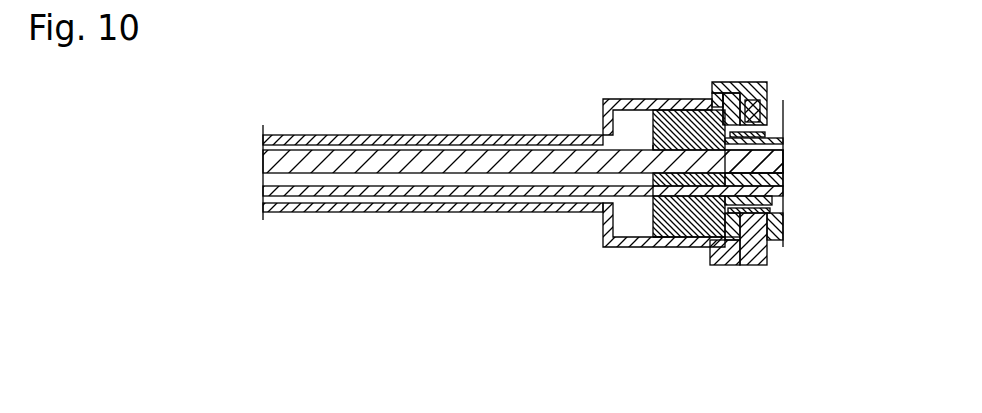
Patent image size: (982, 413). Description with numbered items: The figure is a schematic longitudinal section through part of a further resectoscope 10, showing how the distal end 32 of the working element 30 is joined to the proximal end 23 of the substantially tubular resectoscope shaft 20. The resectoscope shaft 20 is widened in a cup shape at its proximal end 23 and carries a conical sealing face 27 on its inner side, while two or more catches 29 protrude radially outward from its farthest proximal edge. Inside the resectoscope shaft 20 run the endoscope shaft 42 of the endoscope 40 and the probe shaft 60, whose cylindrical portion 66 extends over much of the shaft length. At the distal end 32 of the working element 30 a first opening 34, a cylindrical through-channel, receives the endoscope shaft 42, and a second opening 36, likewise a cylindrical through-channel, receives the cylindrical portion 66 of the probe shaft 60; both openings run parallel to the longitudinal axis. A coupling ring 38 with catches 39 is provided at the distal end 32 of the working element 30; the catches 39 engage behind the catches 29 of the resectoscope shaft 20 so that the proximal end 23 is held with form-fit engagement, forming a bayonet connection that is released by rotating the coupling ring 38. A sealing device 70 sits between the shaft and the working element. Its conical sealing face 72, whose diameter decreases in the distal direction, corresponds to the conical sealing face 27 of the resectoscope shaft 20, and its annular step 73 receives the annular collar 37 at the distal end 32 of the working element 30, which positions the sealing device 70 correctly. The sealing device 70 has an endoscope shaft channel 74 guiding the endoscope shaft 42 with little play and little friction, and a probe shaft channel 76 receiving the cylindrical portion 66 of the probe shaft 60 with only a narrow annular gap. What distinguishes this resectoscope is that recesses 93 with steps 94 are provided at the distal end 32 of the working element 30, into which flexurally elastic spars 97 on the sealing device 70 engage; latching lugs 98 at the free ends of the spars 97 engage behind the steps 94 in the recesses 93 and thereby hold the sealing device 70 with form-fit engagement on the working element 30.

The resectoscope 10 is at (311, 53).
The resectoscope shaft 20 is at (438, 134).
The proximal end 23 is at (654, 105).
The conical sealing face 27 is at (670, 112).
The catches 29 is at (737, 100).
The working element 30 is at (775, 146).
The distal end 32 is at (780, 242).
The first opening 34 is at (770, 182).
The second opening 36 is at (773, 212).
The annular collar 37 is at (742, 232).
The coupling ring 38 is at (770, 103).
The catches 39 is at (722, 103).
The endoscope 40 is at (523, 221).
The endoscope shaft 42 is at (317, 173).
The probe shaft 60 is at (523, 239).
The cylindrical portion 66 is at (446, 196).
The sealing device 70 is at (687, 237).
The conical sealing face 72 is at (660, 237).
The annular step 73 is at (733, 240).
The endoscope shaft channel 74 is at (660, 155).
The probe shaft channel 76 is at (663, 195).
The recesses 93 is at (772, 137).
The steps 94 is at (770, 100).
The flexurally elastic spars 97 is at (713, 103).
The latching lugs 98 is at (777, 128).